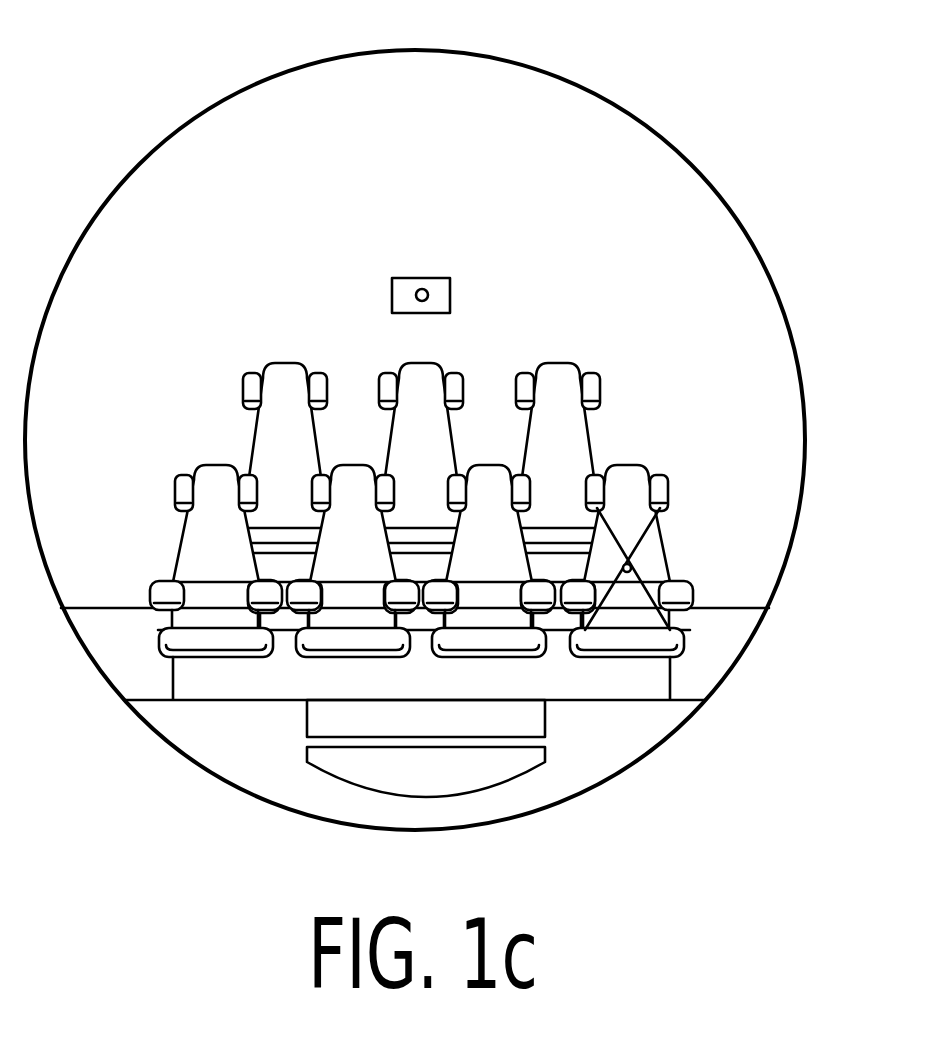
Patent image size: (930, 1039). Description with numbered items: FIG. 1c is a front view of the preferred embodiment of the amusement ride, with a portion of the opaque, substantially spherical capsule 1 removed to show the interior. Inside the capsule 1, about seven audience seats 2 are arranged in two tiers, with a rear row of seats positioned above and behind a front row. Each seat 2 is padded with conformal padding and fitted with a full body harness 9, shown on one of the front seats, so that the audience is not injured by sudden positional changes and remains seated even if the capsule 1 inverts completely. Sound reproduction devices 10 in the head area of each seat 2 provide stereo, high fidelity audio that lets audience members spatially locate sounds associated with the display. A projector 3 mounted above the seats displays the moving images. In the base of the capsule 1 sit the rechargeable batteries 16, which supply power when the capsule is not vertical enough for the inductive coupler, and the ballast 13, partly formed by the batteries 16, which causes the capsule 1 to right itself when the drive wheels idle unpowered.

The spherical capsule 1 is at (600, 97).
The audience seats 2 is at (576, 366).
The projector 3 is at (404, 278).
The full body harnesses 9 is at (632, 568).
The sound reproduction devices 10 is at (250, 388).
The ballast 13 is at (545, 762).
The rechargeable batteries 16 is at (545, 720).